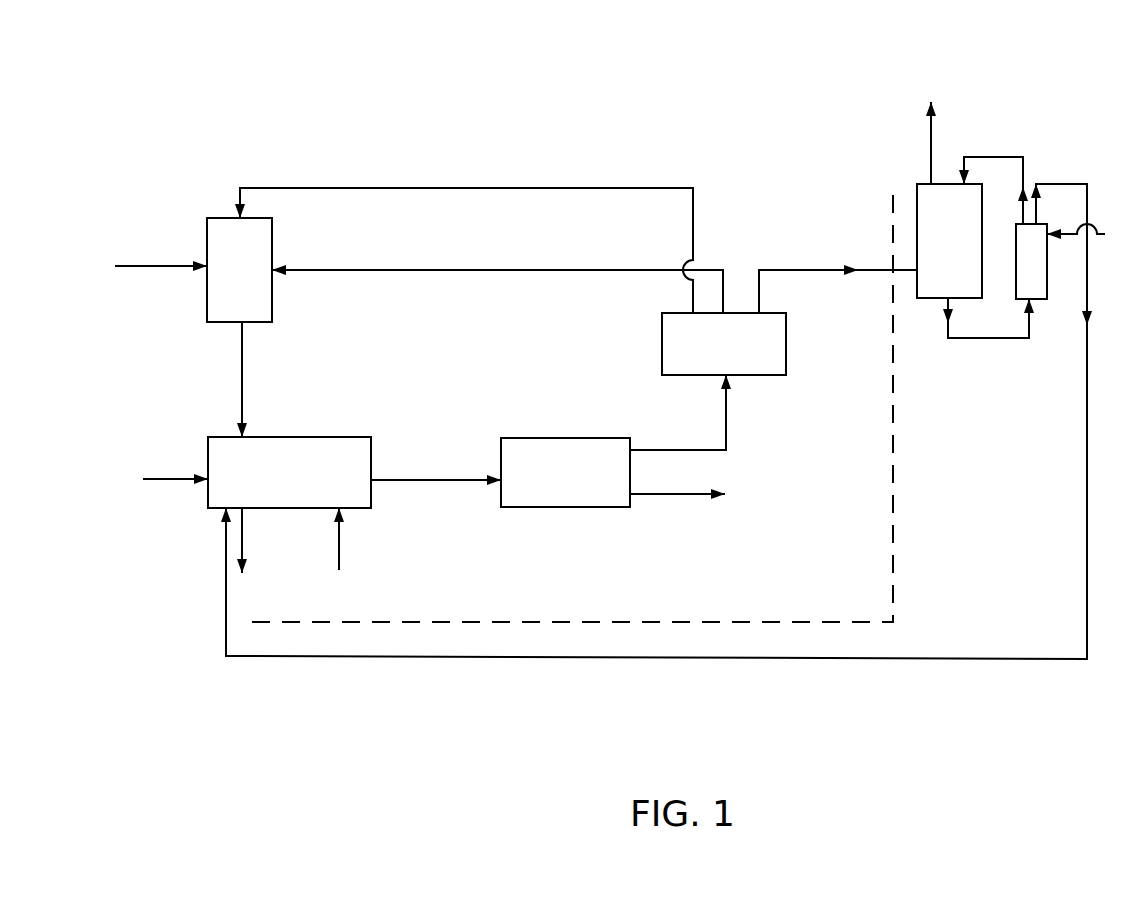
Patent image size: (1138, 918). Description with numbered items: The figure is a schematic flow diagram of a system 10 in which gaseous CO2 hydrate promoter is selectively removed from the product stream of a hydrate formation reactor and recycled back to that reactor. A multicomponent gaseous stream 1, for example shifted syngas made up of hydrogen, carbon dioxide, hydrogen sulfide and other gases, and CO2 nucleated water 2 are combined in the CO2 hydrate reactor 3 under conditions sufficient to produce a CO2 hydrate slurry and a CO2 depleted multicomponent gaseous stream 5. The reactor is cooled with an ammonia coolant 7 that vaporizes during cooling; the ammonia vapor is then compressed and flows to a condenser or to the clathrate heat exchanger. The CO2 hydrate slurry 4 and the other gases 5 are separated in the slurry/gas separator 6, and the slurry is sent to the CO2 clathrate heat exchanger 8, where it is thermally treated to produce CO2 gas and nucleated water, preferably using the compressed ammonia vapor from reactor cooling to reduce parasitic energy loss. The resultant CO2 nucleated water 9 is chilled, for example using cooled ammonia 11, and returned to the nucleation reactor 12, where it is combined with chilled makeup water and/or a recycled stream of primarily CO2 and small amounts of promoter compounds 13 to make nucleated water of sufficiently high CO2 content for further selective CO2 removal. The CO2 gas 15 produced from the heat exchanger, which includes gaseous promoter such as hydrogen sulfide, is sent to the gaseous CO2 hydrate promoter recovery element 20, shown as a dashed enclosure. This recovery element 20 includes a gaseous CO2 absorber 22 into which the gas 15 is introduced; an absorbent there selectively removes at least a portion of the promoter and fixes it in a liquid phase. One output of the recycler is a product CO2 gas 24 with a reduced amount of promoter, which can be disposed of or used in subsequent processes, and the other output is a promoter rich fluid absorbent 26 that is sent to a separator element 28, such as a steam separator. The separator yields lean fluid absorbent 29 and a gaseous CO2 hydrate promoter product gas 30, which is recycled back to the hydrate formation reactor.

The multicomponent gaseous stream 1 is at (180, 478).
The CO2 nucleated water 2 is at (242, 388).
The CO2 hydrate reactor 3 is at (325, 436).
The CO2 hydrate slurry 4 is at (395, 478).
The CO2 depleted multicomponent gaseous stream 5 is at (430, 482).
The slurry/gas separator 6 is at (585, 508).
The ammonia coolant 7 is at (245, 540).
The CO2 clathrate heat exchanger 8 is at (787, 352).
The CO2 nucleated water 9 is at (645, 188).
The system 10 is at (189, 166).
The cooled ammonia 11 is at (165, 265).
The nucleation reactor 12 is at (263, 240).
The recycled stream of primarily CO2 and small amounts of promoter compounds 13 is at (425, 269).
The CO2 gas 15 is at (760, 292).
The gaseous CO2 hydrate promoter recovery element 20 is at (1060, 119).
The gaseous CO2 absorber 22 is at (917, 245).
The product CO2 gas 24 is at (931, 145).
The gaseous CO2 promoter rich fluid absorbent 26 is at (985, 338).
The separator element 28 is at (1016, 290).
The lean fluid absorbent 29 is at (1003, 157).
The gaseous CO2 hydrate promoter product gas 30 is at (1050, 182).